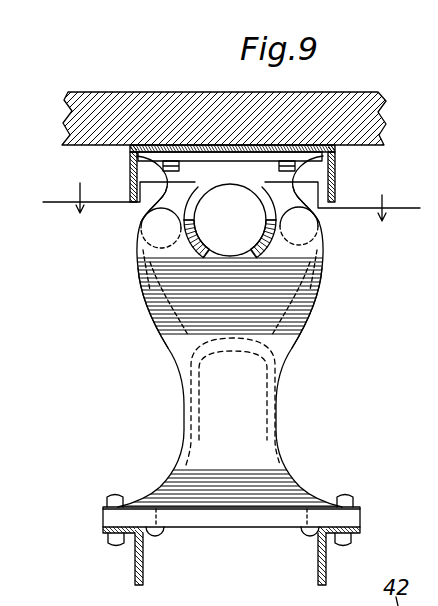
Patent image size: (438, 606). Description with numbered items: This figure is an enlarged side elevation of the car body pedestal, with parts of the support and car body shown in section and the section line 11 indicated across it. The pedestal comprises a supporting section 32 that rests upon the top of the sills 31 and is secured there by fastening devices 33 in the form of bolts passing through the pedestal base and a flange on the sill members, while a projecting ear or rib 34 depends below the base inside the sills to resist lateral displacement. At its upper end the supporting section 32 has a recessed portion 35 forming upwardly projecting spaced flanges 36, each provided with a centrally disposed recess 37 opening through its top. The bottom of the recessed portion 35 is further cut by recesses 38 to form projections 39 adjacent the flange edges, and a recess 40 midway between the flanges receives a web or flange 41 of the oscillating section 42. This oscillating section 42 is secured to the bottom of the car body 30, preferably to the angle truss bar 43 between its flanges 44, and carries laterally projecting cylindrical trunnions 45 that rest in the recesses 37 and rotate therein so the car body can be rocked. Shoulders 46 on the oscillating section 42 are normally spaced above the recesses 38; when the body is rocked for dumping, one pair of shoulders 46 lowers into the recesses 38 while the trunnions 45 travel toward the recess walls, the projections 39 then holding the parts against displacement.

The car body 30 is at (350, 108).
The sills 31 is at (144, 581).
The supporting section 32 is at (281, 341).
The fastening devices 33 is at (120, 494).
The projecting ear or rib 34 is at (160, 533).
The recessed portion 35 is at (229, 227).
The flanges 36 is at (152, 210).
The recess 37 is at (221, 220).
The recesses 38 is at (140, 277).
The projections 39 is at (140, 257).
The recess 40 is at (191, 351).
The web or flange 41 is at (177, 306).
The oscillating section 42 is at (196, 168).
The angle truss bar 43 is at (271, 147).
The flanges 44 is at (131, 168).
The trunnions 45 is at (230, 220).
The shoulders 46 is at (150, 206).
The section line 11- 11 is at (231, 201).